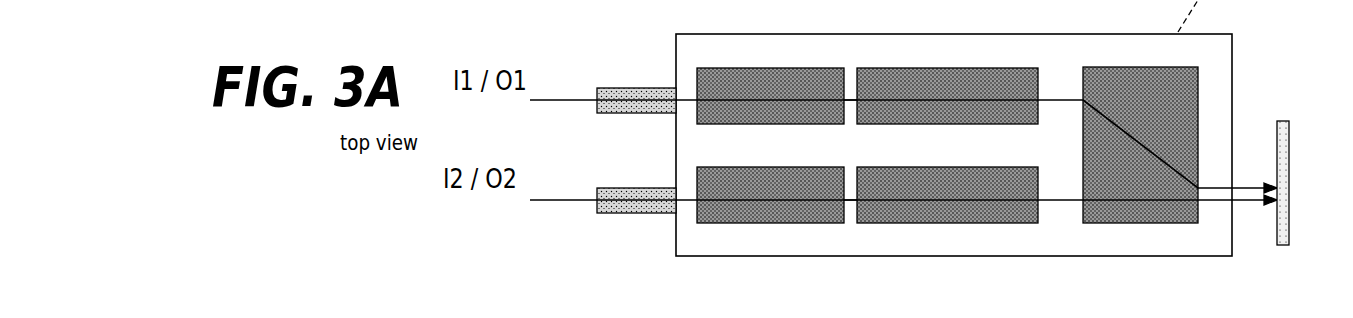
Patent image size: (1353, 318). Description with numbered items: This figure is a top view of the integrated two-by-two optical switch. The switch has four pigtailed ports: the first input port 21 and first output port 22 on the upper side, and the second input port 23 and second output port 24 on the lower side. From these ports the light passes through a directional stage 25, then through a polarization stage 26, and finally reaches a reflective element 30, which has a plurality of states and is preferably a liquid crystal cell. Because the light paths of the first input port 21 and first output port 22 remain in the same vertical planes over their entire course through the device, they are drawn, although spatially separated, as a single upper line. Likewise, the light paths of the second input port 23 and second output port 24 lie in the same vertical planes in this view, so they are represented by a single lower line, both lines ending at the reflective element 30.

The pigtailed port I1 21 is at (780, 105).
The pigtailed port O1 22 is at (822, 100).
The pigtailed port I2 23 is at (873, 204).
The pigtailed port O2 24 is at (825, 200).
The directional stage 25 is at (693, 58).
The polarization stage 26 is at (1083, 58).
The reflective element 30 is at (1281, 121).